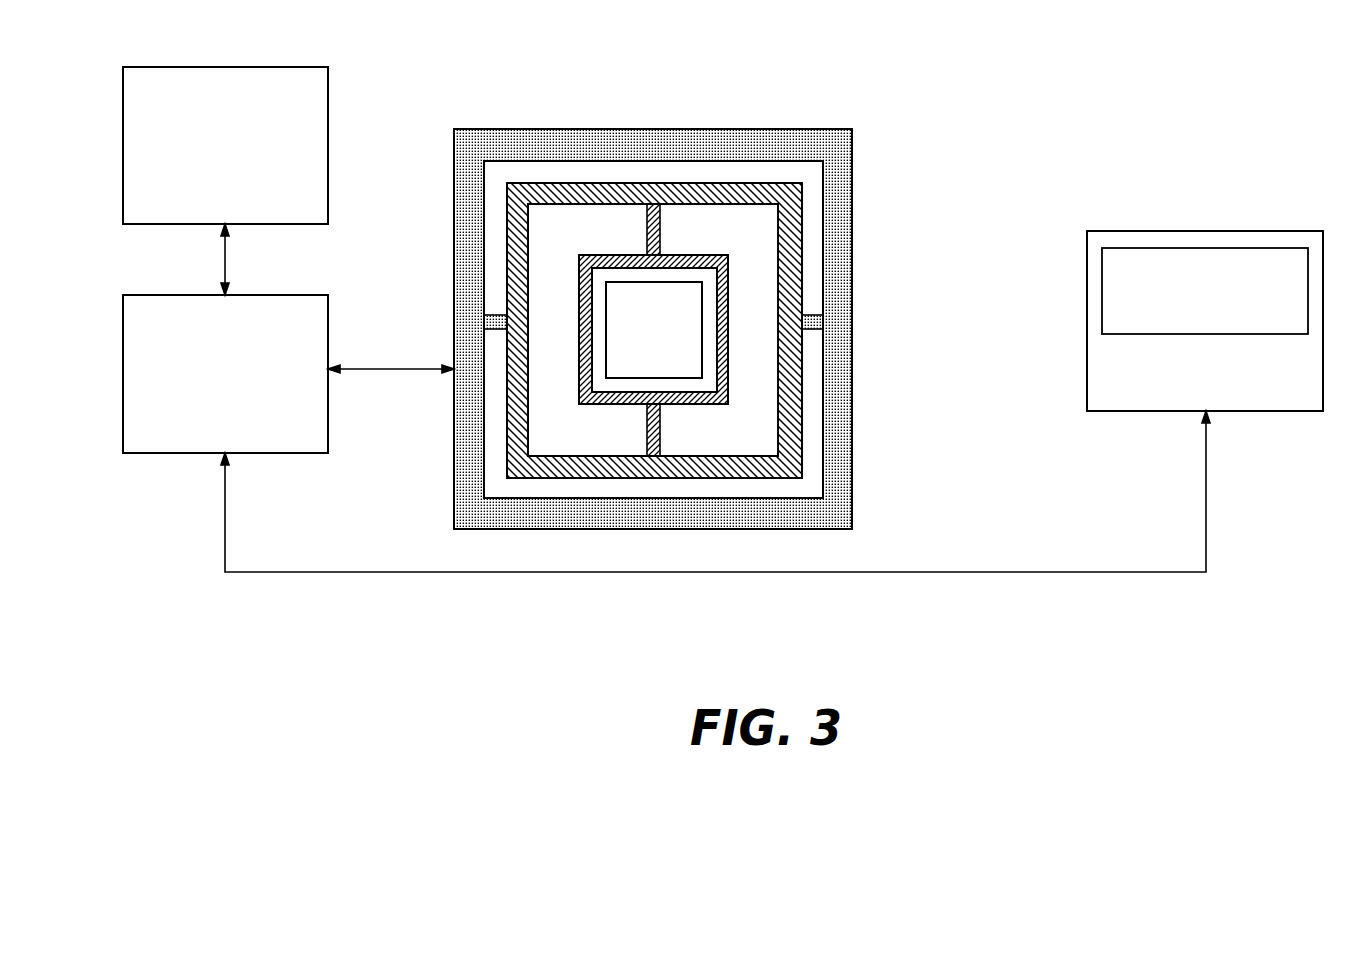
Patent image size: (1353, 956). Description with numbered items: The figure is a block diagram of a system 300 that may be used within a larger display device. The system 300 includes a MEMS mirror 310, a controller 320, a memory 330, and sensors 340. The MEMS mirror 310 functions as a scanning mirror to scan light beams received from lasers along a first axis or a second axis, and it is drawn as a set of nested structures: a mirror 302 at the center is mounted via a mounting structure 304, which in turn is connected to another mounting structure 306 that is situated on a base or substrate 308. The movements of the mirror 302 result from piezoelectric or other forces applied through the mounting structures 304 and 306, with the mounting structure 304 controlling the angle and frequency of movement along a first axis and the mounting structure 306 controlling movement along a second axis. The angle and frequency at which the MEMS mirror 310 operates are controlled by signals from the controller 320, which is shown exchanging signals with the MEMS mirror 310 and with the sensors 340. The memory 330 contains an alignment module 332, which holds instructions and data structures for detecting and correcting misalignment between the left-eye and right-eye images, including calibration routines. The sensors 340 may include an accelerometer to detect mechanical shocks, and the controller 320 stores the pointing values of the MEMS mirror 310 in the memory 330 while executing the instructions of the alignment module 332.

The system 300 is at (755, 642).
The mirror 302 is at (690, 360).
The mounting structure 304 is at (730, 327).
The mounting structure 306 is at (788, 183).
The base or substrate 308 is at (677, 128).
The MEMS mirror 310 is at (500, 103).
The controller 320 is at (328, 424).
The memory 330 is at (1087, 357).
The alignment module 332 is at (1262, 248).
The sensors 340 is at (328, 137).